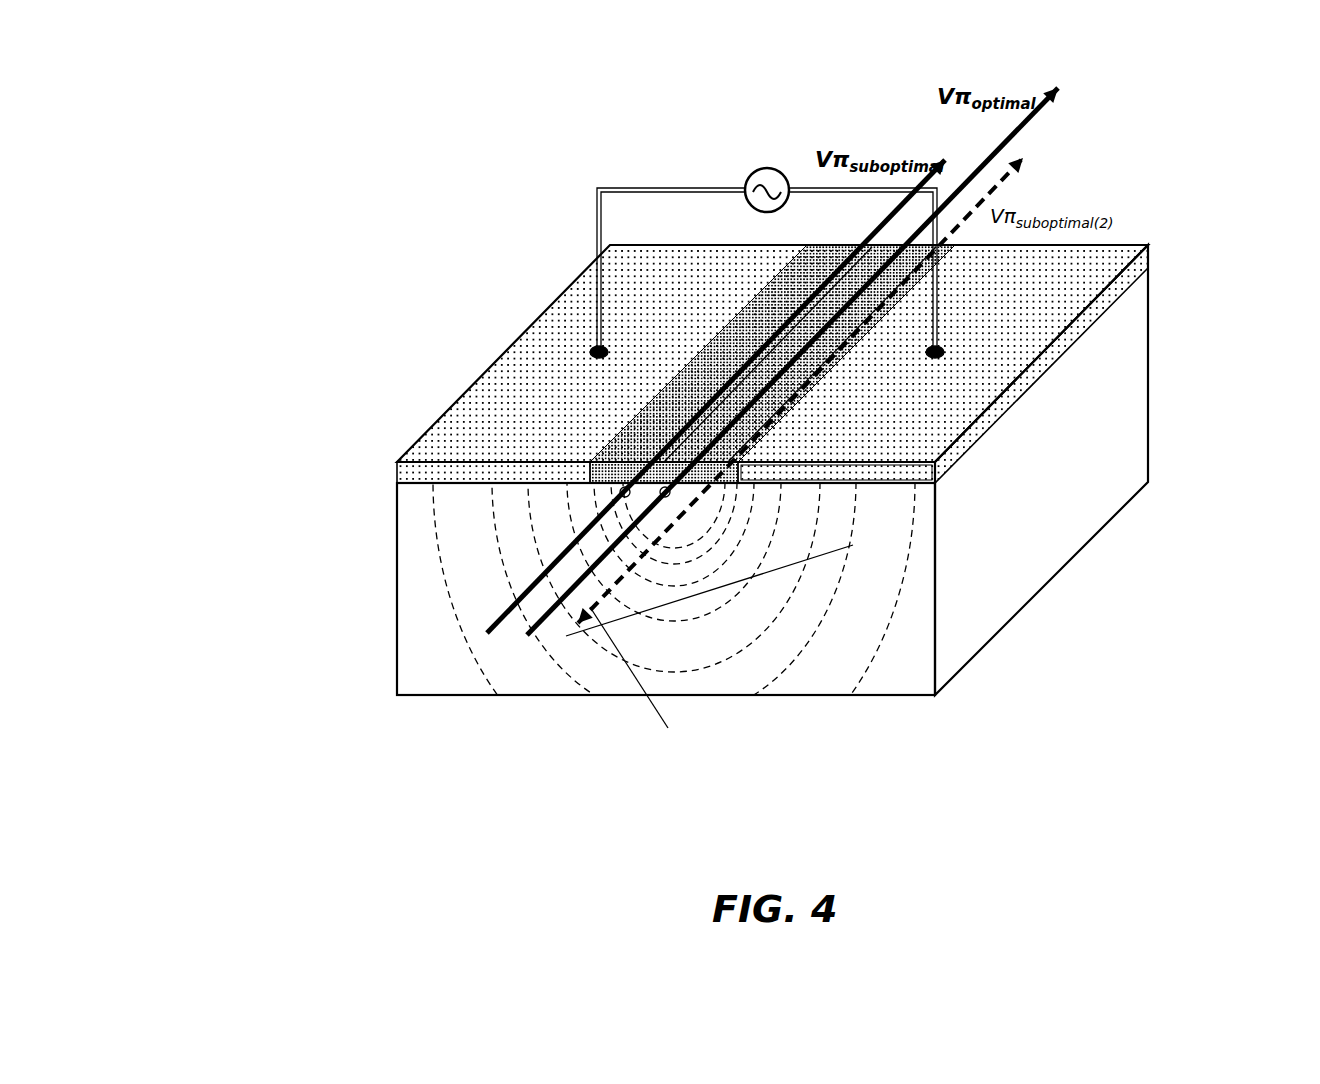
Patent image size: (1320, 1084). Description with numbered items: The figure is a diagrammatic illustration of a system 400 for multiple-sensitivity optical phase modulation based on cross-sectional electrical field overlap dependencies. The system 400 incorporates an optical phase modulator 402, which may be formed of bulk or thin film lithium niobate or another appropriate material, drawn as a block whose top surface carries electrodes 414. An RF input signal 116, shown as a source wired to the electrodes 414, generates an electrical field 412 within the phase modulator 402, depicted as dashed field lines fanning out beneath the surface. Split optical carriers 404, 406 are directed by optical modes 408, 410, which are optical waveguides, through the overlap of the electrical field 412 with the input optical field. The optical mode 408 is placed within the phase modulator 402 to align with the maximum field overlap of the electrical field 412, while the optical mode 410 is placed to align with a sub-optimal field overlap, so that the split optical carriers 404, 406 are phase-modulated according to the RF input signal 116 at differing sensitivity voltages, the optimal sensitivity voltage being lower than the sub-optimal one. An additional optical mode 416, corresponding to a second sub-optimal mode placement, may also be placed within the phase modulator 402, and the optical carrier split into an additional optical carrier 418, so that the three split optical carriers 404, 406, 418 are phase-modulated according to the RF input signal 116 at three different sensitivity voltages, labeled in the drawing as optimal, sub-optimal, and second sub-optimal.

The system 400 is at (275, 143).
The RF input signal 116 is at (767, 167).
The optical phase modulator 402 is at (1090, 425).
The split optical carrier 404 is at (497, 617).
The split optical carrier 406 is at (550, 613).
The optical mode 408 is at (655, 456).
The optical mode 410 is at (737, 405).
The electrical field 412 is at (678, 530).
The electrodes 414 is at (440, 443).
The additional optical mode 416 is at (842, 355).
The additional optical carrier 418 is at (640, 685).